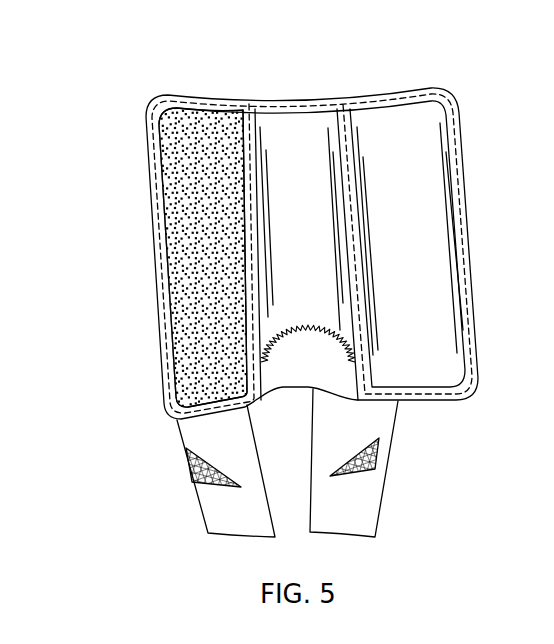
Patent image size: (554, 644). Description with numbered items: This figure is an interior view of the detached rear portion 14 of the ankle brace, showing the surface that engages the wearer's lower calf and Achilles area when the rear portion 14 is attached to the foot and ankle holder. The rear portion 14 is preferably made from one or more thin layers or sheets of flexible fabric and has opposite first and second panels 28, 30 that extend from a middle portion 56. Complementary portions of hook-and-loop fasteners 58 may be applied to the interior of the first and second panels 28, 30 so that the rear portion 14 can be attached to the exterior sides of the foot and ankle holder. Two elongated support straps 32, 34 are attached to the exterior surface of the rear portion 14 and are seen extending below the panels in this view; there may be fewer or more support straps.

The rear portion 14 is at (336, 55).
The first panel 28 is at (467, 145).
The second panel 30 is at (146, 223).
The support strap 32 is at (382, 427).
The support strap 34 is at (192, 488).
The middle portion 56 is at (281, 138).
The hook-and-loop fasteners 58 is at (183, 327).